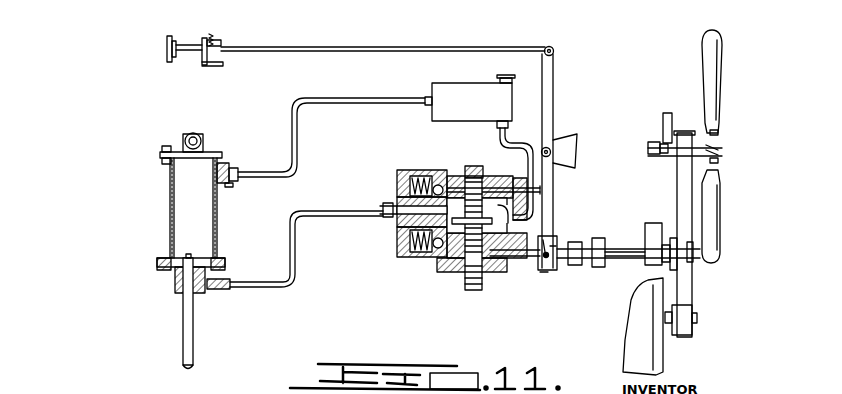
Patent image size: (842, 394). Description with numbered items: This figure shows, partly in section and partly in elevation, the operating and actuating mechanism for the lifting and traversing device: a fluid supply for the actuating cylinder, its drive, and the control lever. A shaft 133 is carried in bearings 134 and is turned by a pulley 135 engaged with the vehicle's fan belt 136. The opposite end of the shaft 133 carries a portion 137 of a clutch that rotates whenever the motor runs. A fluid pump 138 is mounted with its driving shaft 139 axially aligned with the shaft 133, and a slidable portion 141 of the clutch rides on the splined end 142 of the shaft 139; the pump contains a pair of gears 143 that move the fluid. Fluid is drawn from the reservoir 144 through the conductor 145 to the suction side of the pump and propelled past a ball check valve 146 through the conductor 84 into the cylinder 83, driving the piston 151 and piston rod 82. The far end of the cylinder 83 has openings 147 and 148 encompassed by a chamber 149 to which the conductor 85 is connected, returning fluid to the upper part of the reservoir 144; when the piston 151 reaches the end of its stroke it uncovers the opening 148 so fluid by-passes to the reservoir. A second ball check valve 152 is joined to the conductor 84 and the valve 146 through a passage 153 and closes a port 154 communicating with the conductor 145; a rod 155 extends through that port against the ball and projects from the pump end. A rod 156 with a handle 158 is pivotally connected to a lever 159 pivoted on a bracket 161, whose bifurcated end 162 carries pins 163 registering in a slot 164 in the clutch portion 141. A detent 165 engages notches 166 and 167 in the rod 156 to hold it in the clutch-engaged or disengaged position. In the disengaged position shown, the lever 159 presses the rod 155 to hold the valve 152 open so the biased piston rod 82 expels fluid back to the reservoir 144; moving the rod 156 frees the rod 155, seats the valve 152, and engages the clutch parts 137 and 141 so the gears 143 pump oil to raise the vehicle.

The piston rod 82 is at (196, 348).
The cylinder 83 is at (217, 236).
The conductor 84 is at (258, 289).
The conductor 85 is at (332, 98).
The shaft 133 is at (630, 260).
The bearings 134 is at (650, 244).
The pulley 135 is at (694, 262).
The fan belt 136 is at (681, 205).
The portion of clutch 137 is at (575, 266).
The fluid pump 138 is at (458, 262).
The driving shaft 139 is at (505, 262).
The portion of clutch 141 is at (545, 276).
The splined end 142 is at (548, 240).
The gears 143 is at (468, 290).
The reservoir 144 is at (466, 97).
The conductor 145 is at (541, 190).
The ball check valve 146 is at (437, 258).
The opening 147 is at (222, 165).
The opening 148 is at (234, 180).
The chamber 149 is at (232, 170).
The piston 151 is at (165, 262).
The ball check valve 152 is at (440, 180).
The passage 153 is at (400, 206).
The port 154 is at (460, 176).
The rod 155 is at (516, 185).
The rod 156 is at (358, 46).
The handle 158 is at (167, 42).
The lever 159 is at (553, 64).
The bracket 161 is at (572, 134).
The bifurcated end 162 is at (557, 247).
The pins 163 is at (598, 240).
The slot 164 is at (550, 272).
The detent 165 is at (212, 45).
The notch 166 is at (224, 46).
The notch 167 is at (209, 35).